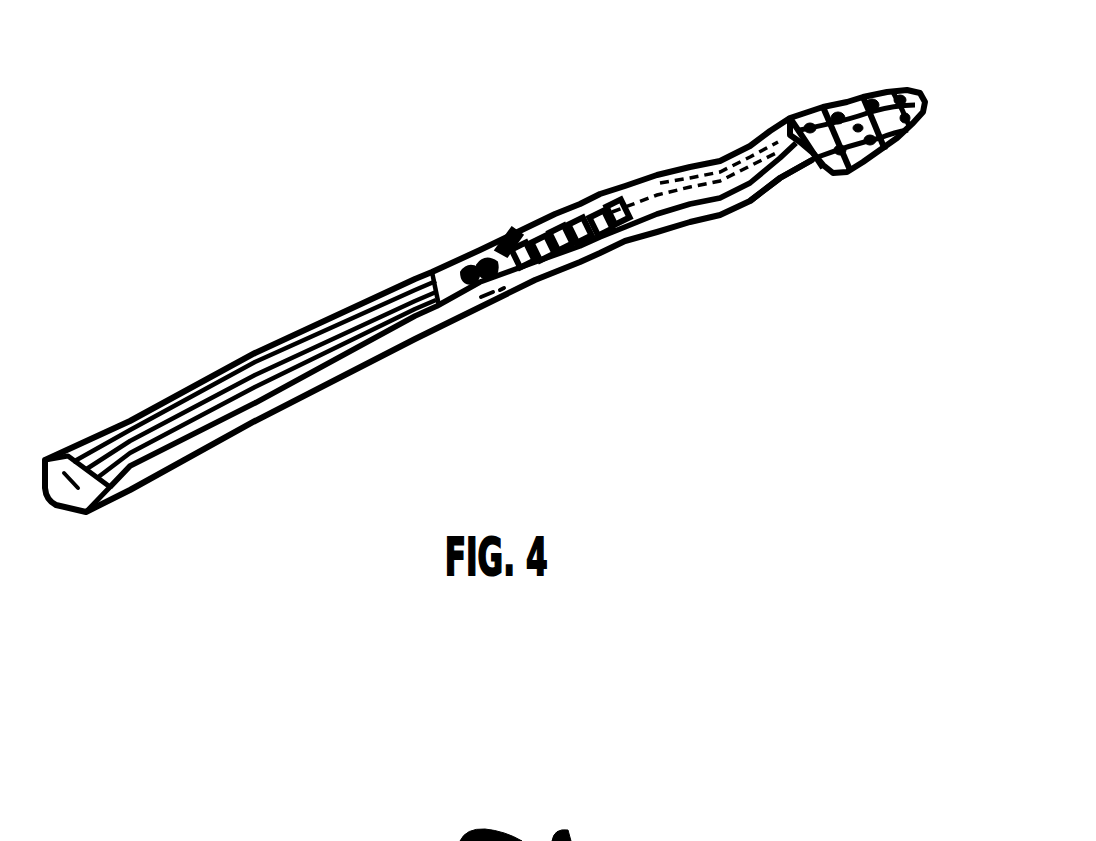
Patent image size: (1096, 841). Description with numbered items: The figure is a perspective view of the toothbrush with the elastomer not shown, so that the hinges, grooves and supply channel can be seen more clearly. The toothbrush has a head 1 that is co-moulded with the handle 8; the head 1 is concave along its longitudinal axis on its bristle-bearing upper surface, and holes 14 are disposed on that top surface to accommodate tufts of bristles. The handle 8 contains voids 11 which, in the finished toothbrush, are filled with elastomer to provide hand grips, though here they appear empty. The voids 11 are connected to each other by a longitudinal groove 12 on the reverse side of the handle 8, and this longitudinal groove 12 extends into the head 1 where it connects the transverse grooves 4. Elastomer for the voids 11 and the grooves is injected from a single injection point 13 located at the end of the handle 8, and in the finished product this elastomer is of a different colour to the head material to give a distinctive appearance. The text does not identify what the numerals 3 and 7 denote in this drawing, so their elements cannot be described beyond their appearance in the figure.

The head 1 is at (790, 93).
The transverse grooves 4 is at (857, 98).
The neck 3 is at (798, 180).
The holes 14 is at (878, 150).
The longitudinal groove 12 is at (718, 200).
The handle 8 is at (537, 300).
The voids 11 is at (284, 390).
The single injection point 13 is at (113, 494).
The thumb grip 7 is at (430, 274).